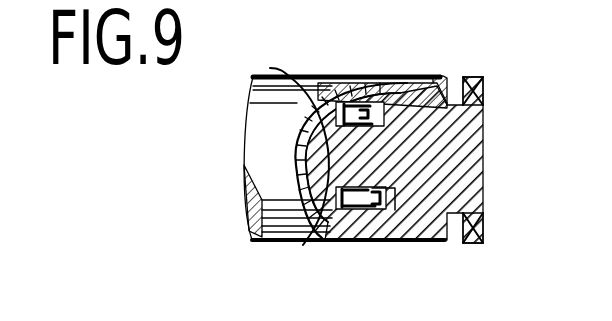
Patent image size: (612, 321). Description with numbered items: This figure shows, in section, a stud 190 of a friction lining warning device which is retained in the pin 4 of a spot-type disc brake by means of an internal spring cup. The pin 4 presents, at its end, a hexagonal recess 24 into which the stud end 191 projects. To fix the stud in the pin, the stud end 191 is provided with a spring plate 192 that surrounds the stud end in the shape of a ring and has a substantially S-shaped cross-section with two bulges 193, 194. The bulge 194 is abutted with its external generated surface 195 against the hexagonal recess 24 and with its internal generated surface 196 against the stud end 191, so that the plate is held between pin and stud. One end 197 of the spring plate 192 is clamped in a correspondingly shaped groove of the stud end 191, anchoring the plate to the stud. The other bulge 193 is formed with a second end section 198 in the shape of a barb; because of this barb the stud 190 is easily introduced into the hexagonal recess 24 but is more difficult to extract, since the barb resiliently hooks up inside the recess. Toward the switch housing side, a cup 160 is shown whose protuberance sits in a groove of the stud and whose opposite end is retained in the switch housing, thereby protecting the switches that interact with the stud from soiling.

The pin 4 is at (255, 112).
The hexagonal recess 24 is at (318, 160).
The cup 160 is at (473, 77).
The stud 190 is at (475, 132).
The stud end 191 is at (302, 244).
The spring plate 192 is at (382, 82).
The bulge 193 is at (286, 146).
The bulge 194 is at (385, 146).
The external generated surface 195 is at (382, 242).
The internal generated surface 196 is at (360, 242).
The end of the spring plate 197 is at (434, 78).
The second end section 198 is at (319, 83).